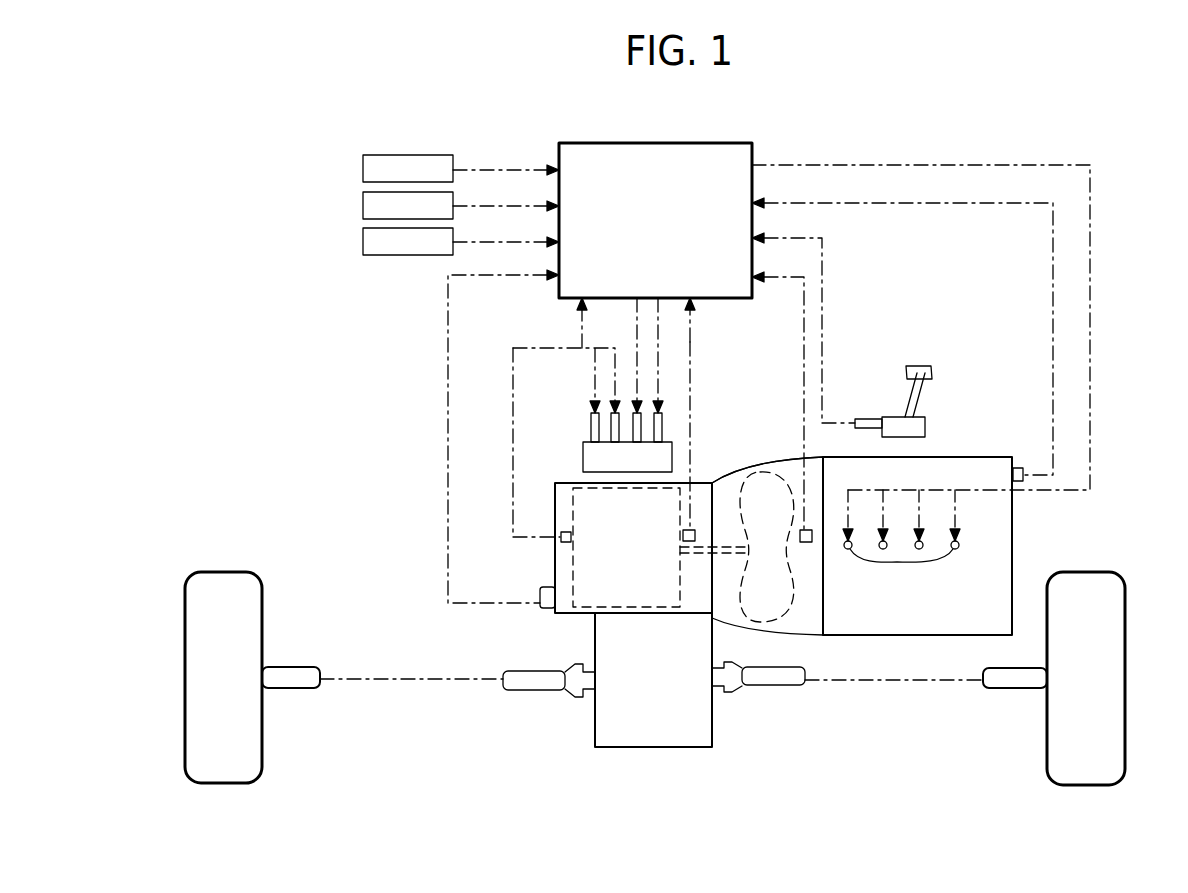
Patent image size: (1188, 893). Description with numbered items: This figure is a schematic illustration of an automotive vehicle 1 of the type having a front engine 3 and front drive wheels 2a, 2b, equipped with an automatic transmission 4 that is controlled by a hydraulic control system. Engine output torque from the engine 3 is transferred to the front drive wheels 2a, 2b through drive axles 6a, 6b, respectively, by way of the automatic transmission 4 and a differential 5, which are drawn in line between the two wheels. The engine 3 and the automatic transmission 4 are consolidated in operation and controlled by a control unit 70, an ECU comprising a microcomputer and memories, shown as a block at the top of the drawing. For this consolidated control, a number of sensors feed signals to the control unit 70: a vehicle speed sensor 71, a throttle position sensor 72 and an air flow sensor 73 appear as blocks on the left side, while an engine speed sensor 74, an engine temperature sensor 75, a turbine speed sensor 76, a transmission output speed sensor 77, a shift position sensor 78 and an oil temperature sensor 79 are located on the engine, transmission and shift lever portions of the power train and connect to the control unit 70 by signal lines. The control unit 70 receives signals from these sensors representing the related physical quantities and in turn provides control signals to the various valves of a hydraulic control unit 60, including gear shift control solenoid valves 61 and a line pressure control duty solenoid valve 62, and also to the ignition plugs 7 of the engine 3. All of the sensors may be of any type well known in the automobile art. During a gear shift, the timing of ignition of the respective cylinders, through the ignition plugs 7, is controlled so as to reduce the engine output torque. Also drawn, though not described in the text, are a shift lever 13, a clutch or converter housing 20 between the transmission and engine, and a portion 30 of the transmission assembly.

The automotive vehicle 1 is at (1106, 453).
The front drive wheel 2a is at (260, 580).
The front drive wheel 2b is at (1125, 578).
The engine 3 is at (1012, 560).
The automatic transmission 4 is at (770, 422).
The differential 5 is at (712, 748).
The drive axle 6a is at (522, 690).
The drive axle 6b is at (790, 686).
The ignition plugs 7 is at (901, 539).
The shift lever 13 is at (921, 392).
The clutch 20 is at (812, 636).
The transmission 30 is at (555, 573).
The hydraulic control unit 60 is at (583, 450).
The gear shift control solenoid valves 61 is at (597, 426).
The line pressure control duty solenoid valve 62 is at (665, 427).
The control unit 70 is at (752, 158).
The vehicle speed sensor 71 is at (363, 168).
The throttle position sensor 72 is at (363, 205).
The air flow sensor 73 is at (363, 241).
The engine speed sensor 74 is at (812, 543).
The engine temperature sensor 75 is at (1018, 467).
The turbine speed sensor 76 is at (685, 530).
The transmission output speed sensor 77 is at (562, 533).
The shift position sensor 78 is at (866, 419).
The oil temperature sensor 79 is at (545, 608).